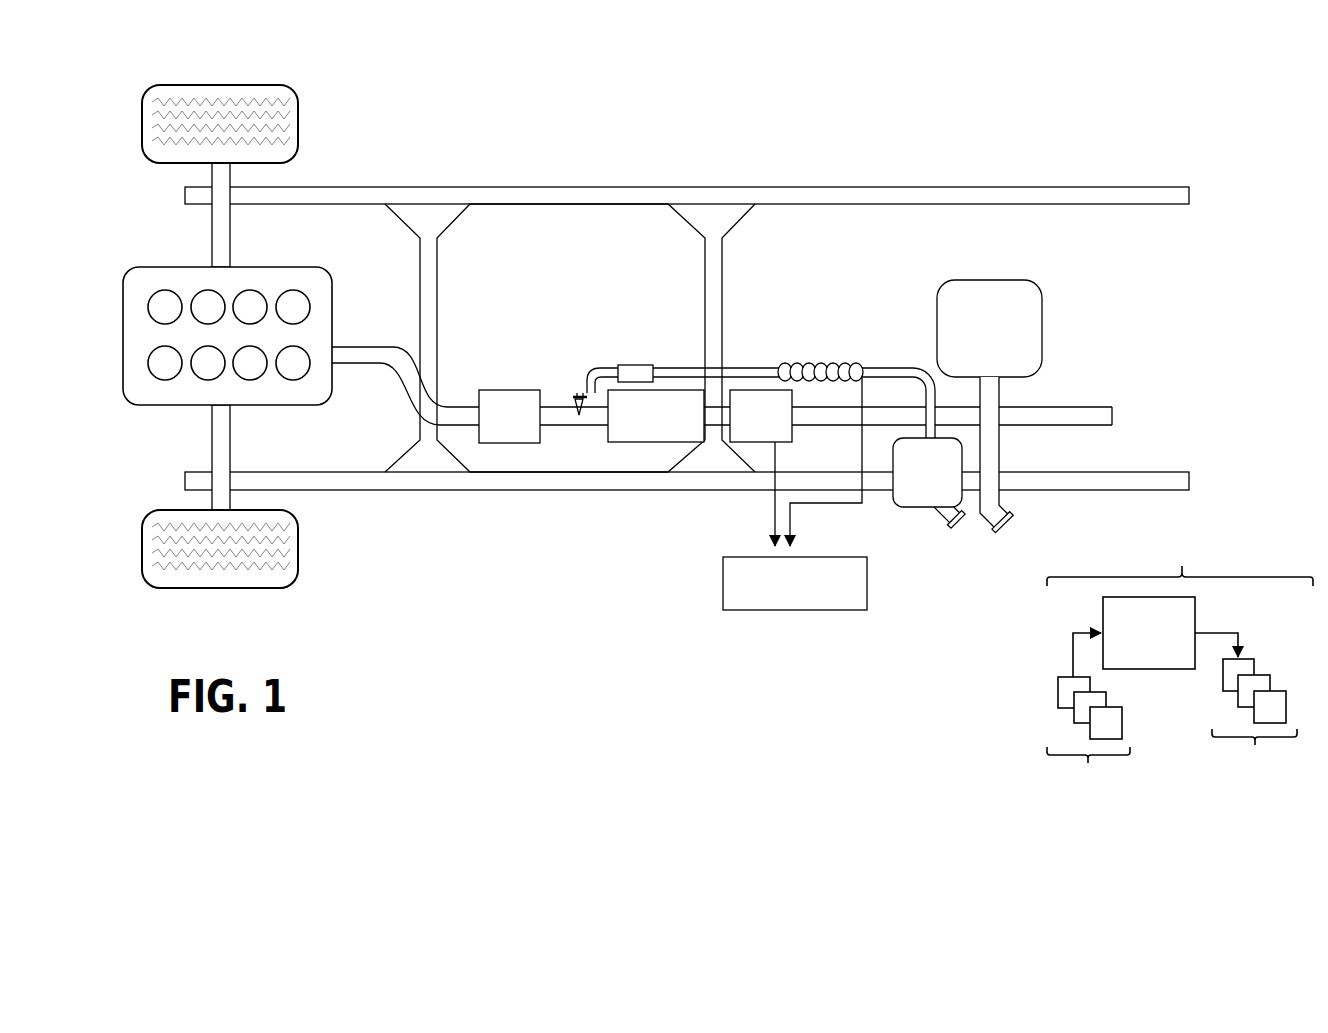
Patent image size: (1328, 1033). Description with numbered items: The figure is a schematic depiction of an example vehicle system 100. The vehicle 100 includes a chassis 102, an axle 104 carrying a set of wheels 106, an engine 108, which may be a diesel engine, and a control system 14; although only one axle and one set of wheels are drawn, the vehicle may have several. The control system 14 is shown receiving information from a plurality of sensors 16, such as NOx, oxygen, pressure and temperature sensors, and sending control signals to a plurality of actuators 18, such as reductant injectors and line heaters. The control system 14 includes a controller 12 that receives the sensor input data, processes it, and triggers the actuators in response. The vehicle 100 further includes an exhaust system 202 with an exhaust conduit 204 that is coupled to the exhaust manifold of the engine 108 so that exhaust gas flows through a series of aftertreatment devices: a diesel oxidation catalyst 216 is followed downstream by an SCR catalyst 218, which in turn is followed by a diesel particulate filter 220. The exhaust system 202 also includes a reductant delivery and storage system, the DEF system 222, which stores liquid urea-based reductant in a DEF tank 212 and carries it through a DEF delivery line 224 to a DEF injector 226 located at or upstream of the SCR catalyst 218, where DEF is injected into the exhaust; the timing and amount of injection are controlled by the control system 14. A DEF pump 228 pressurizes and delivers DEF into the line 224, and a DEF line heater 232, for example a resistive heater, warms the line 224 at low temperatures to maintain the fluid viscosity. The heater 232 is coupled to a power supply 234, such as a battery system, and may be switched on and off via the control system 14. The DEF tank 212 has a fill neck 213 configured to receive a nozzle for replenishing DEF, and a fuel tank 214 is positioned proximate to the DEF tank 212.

The vehicle system 100 is at (1016, 135).
The chassis 102 is at (553, 187).
The axle 104 is at (212, 251).
The wheels 106 is at (142, 127).
The engine 108 is at (123, 335).
The exhaust system 202 is at (529, 319).
The exhaust conduit 204 is at (378, 346).
The diesel oxidation catalyst 216 is at (509, 416).
The SCR catalyst 218 is at (656, 416).
The diesel particulate filter 220 is at (761, 416).
The DEF injector 226 is at (571, 397).
The DEF pump 228 is at (626, 365).
The DEF system 222 is at (879, 333).
The DEF delivery line 224 is at (757, 367).
The DEF line heater 232 is at (810, 365).
The DEF tank 212 is at (927, 472).
The fill neck 213 is at (926, 516).
The fuel tank 214 is at (989, 406).
The power supply 234 is at (795, 493).
The control system 14 is at (1180, 661).
The controller 12 is at (1149, 633).
The sensors 16 is at (1088, 741).
The actuators 18 is at (1254, 724).